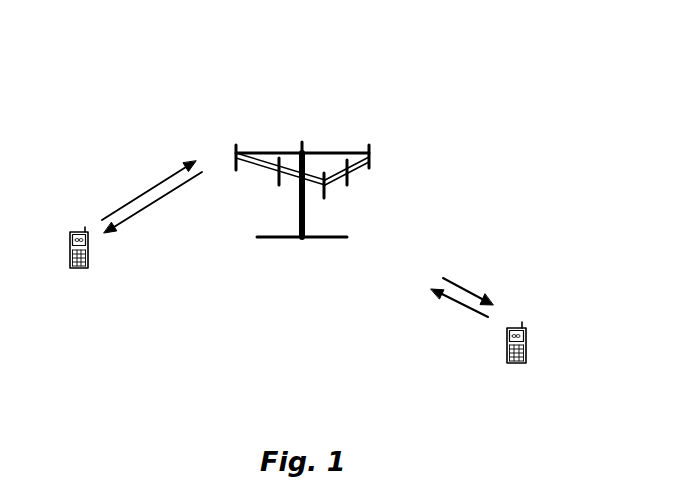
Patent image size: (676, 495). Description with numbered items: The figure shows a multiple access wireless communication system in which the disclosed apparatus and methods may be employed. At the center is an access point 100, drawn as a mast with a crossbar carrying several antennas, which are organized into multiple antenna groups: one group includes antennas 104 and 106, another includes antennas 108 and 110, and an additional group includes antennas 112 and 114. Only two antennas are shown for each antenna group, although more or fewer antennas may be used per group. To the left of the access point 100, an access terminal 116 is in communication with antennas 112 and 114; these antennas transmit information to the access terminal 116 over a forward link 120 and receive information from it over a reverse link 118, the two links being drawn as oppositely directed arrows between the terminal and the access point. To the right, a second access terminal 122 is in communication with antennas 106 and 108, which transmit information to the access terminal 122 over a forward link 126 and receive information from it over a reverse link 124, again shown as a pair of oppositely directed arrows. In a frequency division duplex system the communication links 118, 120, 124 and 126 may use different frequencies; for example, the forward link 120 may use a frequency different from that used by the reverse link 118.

The access point 100 is at (288, 238).
The antenna 104 is at (325, 197).
The antenna 106 is at (347, 185).
The antenna 108 is at (370, 167).
The antenna 110 is at (302, 142).
The antenna 112 is at (240, 152).
The antenna 114 is at (279, 185).
The access terminal 116 is at (80, 232).
The reverse link 118 is at (148, 187).
The forward link 120 is at (162, 200).
The access terminal 122 is at (517, 325).
The reverse link 124 is at (452, 298).
The forward link 126 is at (470, 292).